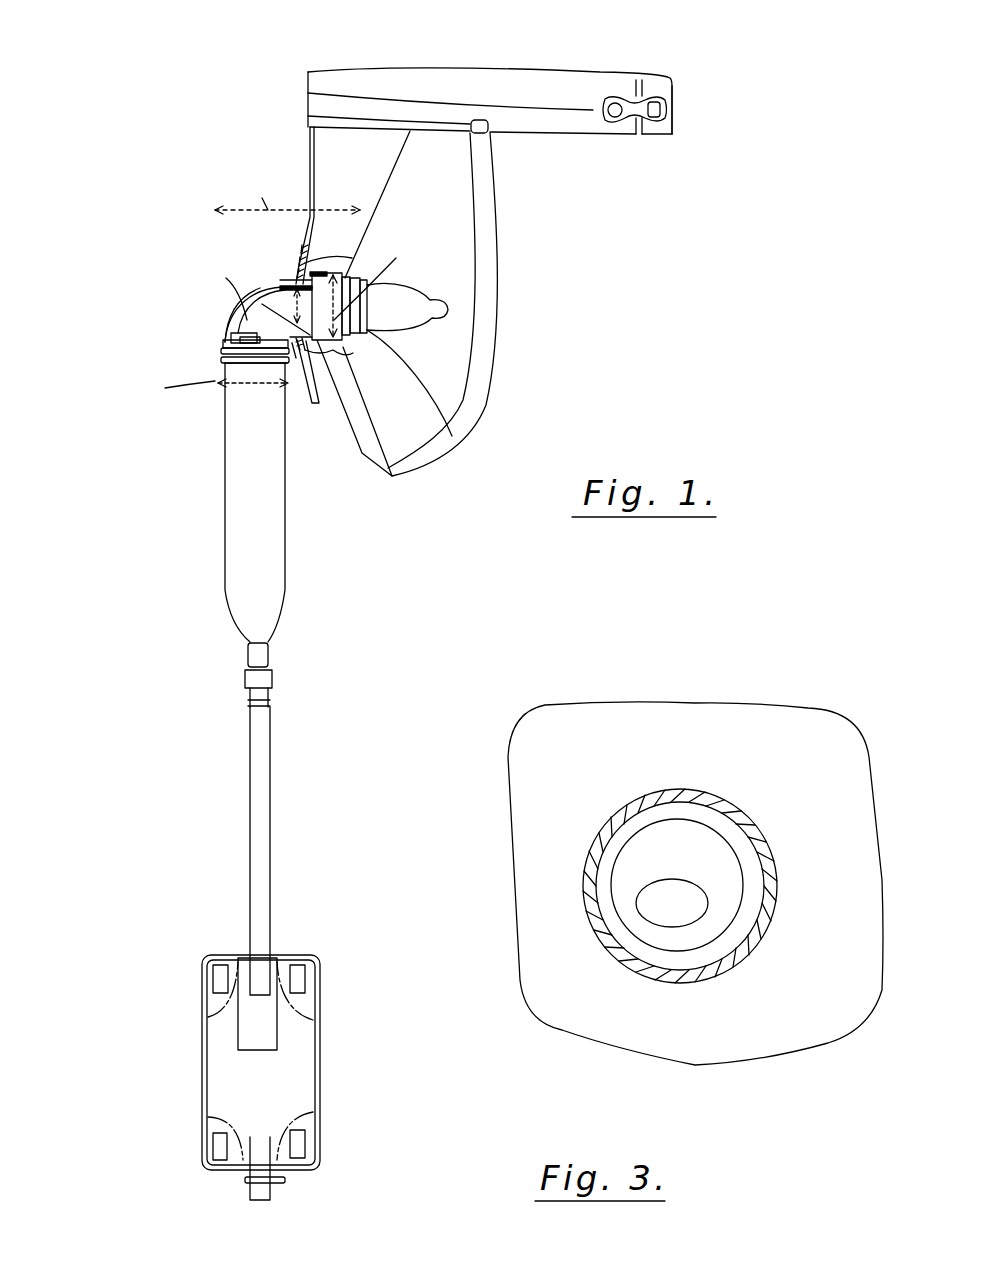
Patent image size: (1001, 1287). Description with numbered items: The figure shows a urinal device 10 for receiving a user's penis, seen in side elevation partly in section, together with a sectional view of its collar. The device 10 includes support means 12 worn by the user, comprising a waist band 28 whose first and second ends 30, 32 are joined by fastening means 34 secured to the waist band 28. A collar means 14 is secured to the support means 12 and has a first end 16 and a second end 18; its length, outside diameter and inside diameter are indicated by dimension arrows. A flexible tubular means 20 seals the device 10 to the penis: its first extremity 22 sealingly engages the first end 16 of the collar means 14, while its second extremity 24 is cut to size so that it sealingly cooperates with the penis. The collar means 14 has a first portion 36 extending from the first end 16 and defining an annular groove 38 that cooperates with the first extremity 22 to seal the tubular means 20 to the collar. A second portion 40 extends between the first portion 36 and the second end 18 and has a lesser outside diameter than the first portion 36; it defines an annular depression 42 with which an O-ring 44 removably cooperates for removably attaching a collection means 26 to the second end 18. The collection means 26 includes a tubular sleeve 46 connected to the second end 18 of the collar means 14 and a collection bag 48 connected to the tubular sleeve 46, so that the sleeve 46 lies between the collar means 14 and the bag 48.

In FIG. 1, the urinal device 10 is at (134, 195).
In FIG. 1, the support means 12 is at (434, 62).
In FIG. 1, the collar means 14 is at (267, 275).
In FIG. 3, the collar means 14 is at (609, 756).
In FIG. 1, the first end 16 is at (347, 278).
In FIG. 1, the second end 18 is at (225, 358).
In FIG. 1, the flexible tubular means 20 is at (395, 315).
In FIG. 3, the flexible tubular means 20 is at (723, 873).
In FIG. 1, the first extremity 22 is at (373, 280).
In FIG. 1, the second extremity 24 is at (432, 300).
In FIG. 3, the second extremity 24 is at (680, 880).
In FIG. 1, the collection means 26 is at (281, 572).
In FIG. 1, the waist band 28 is at (527, 97).
In FIG. 1, the first end 30 is at (623, 130).
In FIG. 1, the second end 32 is at (652, 130).
In FIG. 1, the fastening means 34 is at (613, 103).
In FIG. 1, the first portion 36 is at (322, 332).
In FIG. 1, the annular groove 38 is at (325, 333).
In FIG. 1, the second portion 40 is at (227, 335).
In FIG. 1, the annular depression 42 is at (291, 343).
In FIG. 1, the O-ring 44 is at (225, 333).
In FIG. 1, the tubular sleeve 46 is at (240, 418).
In FIG. 1, the collection bag 48 is at (297, 1062).